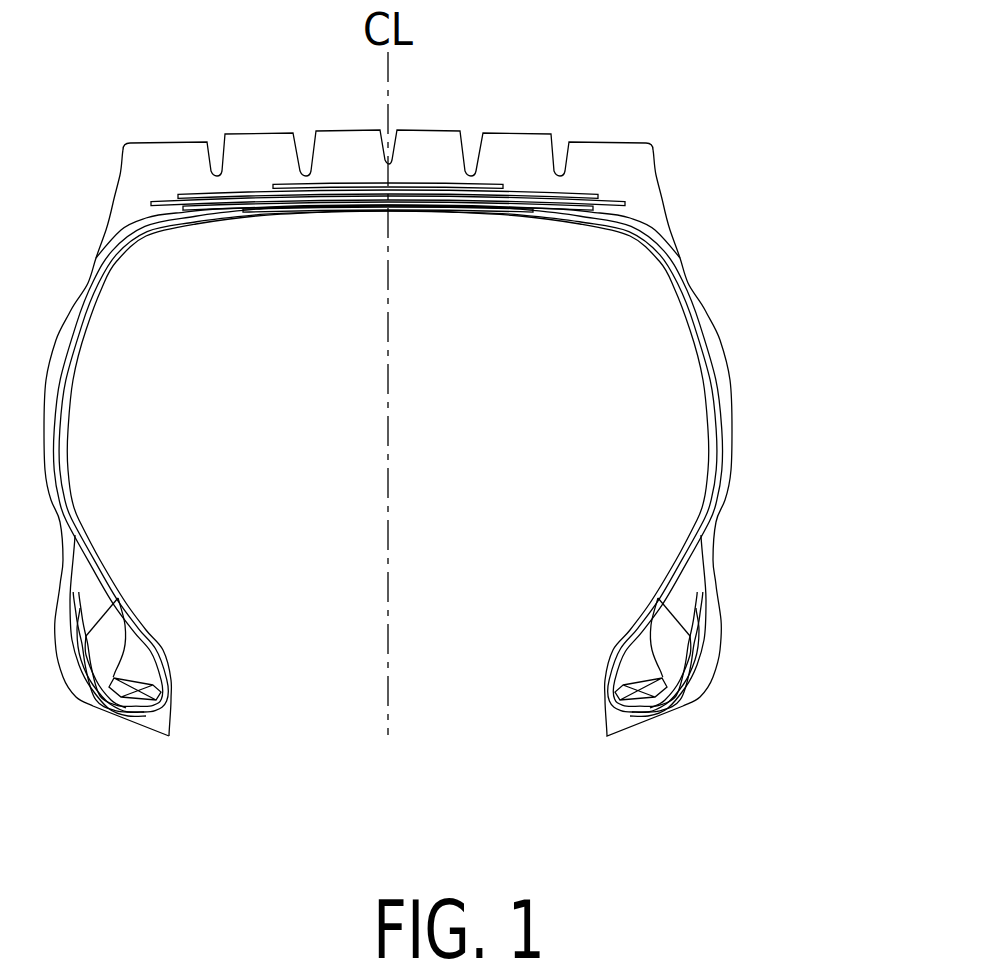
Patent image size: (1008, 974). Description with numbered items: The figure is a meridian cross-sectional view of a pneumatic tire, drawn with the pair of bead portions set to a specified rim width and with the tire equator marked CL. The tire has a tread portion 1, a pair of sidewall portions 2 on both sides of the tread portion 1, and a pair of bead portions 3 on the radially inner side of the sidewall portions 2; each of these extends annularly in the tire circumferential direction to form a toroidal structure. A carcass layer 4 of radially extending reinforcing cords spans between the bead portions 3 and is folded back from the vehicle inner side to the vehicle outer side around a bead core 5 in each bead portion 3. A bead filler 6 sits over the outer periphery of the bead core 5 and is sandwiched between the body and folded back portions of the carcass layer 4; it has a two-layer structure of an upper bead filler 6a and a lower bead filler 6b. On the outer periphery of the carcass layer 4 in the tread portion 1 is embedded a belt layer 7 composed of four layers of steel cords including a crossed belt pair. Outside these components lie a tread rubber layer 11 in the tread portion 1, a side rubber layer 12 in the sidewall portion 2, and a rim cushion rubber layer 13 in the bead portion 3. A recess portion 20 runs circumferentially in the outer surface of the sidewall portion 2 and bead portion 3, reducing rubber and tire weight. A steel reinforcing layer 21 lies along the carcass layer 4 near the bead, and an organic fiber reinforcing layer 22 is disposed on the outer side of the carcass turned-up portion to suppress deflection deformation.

The tread portion 1 is at (388, 151).
The tread rubber layer 11 is at (388, 203).
The sidewall portion 2 is at (633, 428).
The side rubber layer 12 is at (750, 416).
The bead portion 3 is at (656, 674).
The rim cushion rubber layer 13 is at (651, 674).
The carcass layer 4 is at (557, 213).
The bead core 5 is at (617, 693).
The bead filler 6 is at (582, 603).
The upper bead filler 6a is at (672, 581).
The lower bead filler 6b is at (645, 654).
The belt layer 7 is at (353, 199).
The recess portion 20 is at (715, 553).
The steel reinforcing layer 21 is at (610, 736).
The organic fiber reinforcing layer 22 is at (688, 673).